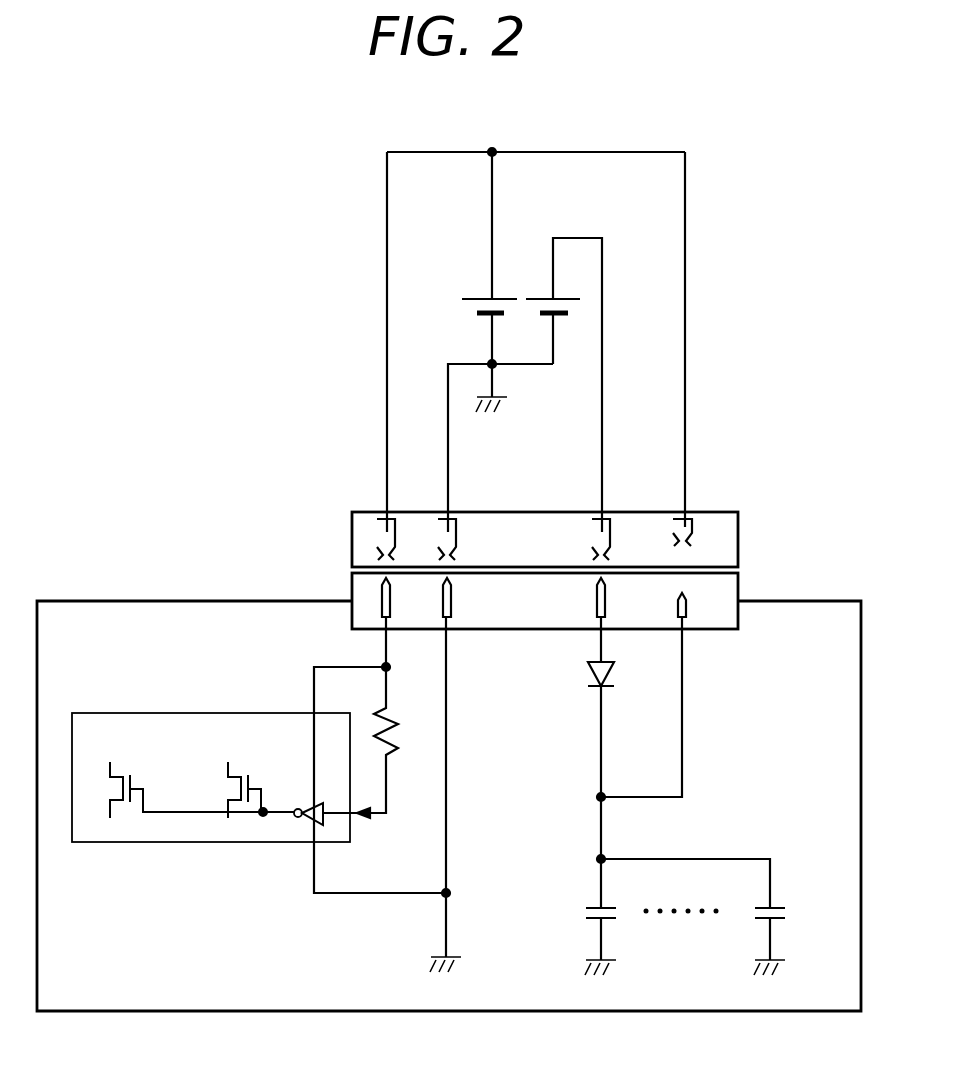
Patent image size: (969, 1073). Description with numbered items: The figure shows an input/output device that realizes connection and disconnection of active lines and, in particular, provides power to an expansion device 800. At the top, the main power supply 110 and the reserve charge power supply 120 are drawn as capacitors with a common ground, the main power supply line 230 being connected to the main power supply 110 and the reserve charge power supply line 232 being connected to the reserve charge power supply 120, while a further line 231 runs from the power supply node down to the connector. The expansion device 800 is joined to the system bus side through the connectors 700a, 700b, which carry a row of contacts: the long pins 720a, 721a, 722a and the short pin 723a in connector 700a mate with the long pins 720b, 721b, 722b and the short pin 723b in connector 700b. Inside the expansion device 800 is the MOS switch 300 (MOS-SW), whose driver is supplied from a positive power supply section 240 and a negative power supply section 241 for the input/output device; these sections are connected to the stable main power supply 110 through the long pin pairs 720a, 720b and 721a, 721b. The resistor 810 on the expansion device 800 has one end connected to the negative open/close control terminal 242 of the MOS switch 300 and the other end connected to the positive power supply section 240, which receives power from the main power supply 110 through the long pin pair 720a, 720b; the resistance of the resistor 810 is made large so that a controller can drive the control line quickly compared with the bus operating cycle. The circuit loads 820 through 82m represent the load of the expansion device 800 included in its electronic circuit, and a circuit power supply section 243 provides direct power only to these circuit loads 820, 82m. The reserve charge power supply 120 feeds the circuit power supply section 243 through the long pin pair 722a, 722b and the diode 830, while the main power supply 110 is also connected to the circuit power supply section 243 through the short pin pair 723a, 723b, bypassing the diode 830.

The main power supply 110 is at (466, 298).
The reserve charge power supply 120 is at (542, 298).
The main power supply line 230 is at (436, 155).
The wiring line 231 is at (450, 437).
The reserve charge power supply line 232 is at (580, 237).
The positive power supply section 240 is at (314, 670).
The negative power supply section 241 is at (448, 832).
The open/close control terminal 242 is at (335, 820).
The circuit power supply section 243 is at (603, 833).
The MOS switch 300 is at (120, 712).
The connector 700a is at (350, 526).
The connector 700b is at (352, 582).
The long pin 720a is at (394, 520).
The long pin 721a is at (456, 520).
The long pin 722a is at (610, 520).
The short pin 723a is at (692, 520).
The long pin 720b is at (382, 620).
The long pin 721b is at (449, 622).
The long pin 722b is at (598, 622).
The short pin 723b is at (687, 622).
The expansion device 800 is at (108, 600).
The resistor 810 is at (392, 757).
The circuit load 820 is at (607, 920).
The circuit load 82m is at (777, 920).
The diode 830 is at (614, 680).